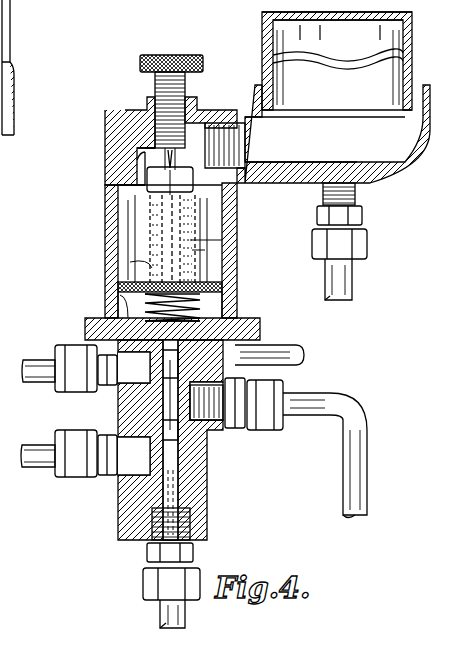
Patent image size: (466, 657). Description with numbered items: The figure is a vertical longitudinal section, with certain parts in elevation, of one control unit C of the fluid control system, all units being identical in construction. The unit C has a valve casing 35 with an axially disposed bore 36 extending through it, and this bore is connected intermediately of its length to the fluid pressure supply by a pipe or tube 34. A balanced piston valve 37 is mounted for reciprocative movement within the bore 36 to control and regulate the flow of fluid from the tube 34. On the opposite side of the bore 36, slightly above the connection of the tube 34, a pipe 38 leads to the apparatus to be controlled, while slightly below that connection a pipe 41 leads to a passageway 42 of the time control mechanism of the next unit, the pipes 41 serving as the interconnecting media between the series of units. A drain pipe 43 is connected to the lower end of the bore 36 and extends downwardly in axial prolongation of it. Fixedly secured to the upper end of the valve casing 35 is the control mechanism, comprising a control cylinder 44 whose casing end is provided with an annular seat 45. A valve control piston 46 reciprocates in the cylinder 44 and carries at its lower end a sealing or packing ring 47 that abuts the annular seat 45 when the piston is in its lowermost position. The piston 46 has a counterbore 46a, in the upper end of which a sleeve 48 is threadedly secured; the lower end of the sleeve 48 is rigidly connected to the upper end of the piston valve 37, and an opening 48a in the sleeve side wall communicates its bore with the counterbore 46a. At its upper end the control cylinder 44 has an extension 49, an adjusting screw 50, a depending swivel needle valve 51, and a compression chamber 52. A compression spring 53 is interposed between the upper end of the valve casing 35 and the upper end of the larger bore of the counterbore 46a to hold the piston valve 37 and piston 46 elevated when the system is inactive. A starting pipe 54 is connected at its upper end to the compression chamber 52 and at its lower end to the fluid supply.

The control unit C is at (152, 45).
The pipe or tube 34 is at (355, 485).
The valve casing 35 is at (200, 476).
The bore 36 is at (176, 450).
The piston valve 37 is at (165, 380).
The pipe 38 is at (43, 360).
The pipe 41 is at (298, 355).
The passageway 42 is at (234, 300).
The drain pipe 43 is at (175, 621).
The control cylinder 44 is at (106, 228).
The annular seat 45 is at (110, 303).
The valve control piston 46 is at (210, 222).
The counterbore 46a is at (215, 253).
The sealing or packing ring 47 is at (118, 287).
The sleeve 48 is at (225, 218).
The opening 48a is at (148, 267).
The extension 49 is at (132, 149).
The adjusting screw 50 is at (185, 55).
The depending swivel needle valve 51 is at (262, 150).
The compression chamber 52 is at (337, 61).
The compression spring 53 is at (200, 296).
The starting pipe 54 is at (338, 274).